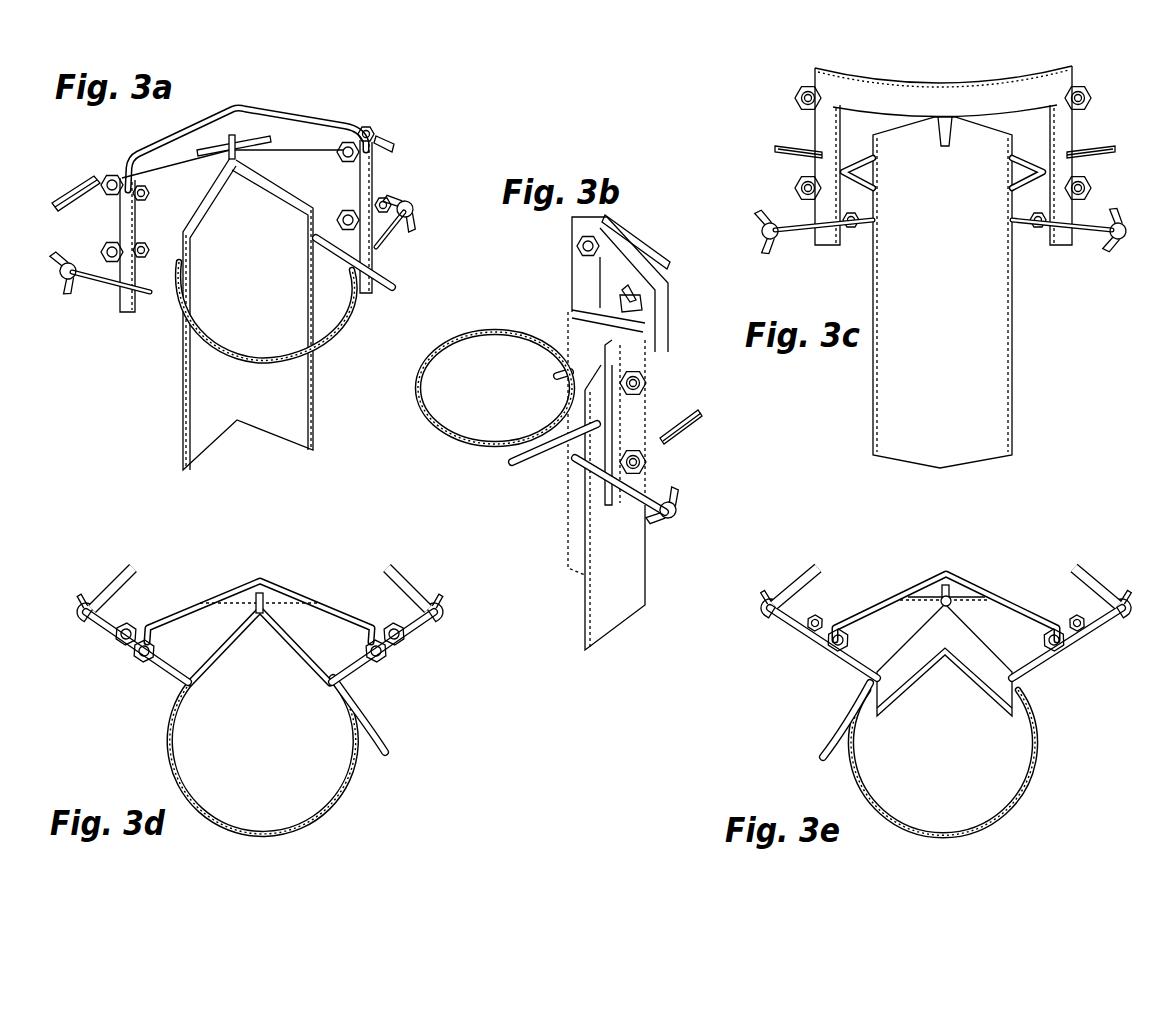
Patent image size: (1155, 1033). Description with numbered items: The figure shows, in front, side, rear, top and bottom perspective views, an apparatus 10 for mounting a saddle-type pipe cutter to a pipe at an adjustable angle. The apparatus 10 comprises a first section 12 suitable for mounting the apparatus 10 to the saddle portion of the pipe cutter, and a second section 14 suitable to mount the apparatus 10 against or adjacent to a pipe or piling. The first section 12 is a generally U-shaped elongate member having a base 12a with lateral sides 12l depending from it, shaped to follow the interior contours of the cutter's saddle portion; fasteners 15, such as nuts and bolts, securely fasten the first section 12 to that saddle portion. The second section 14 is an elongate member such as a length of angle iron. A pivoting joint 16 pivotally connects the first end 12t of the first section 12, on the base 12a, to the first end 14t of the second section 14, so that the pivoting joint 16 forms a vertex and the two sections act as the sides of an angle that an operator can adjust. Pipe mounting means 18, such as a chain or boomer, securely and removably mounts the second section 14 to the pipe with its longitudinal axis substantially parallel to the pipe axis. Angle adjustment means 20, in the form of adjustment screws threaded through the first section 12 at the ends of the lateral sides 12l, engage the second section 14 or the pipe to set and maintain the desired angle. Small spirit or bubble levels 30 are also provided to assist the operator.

In FIG. 3A, the apparatus 10 is at (422, 108).
In FIG. 3B, the apparatus 10 is at (645, 190).
In FIG. 3C, the apparatus 10 is at (767, 108).
In FIG. 3D, the apparatus 10 is at (314, 562).
In FIG. 3E, the apparatus 10 is at (1026, 558).
In FIG. 3A, the first section 12 is at (278, 194).
In FIG. 3B, the first section 12 is at (660, 361).
In FIG. 3C, the first section 12 is at (959, 180).
In FIG. 3D, the first section 12 is at (200, 593).
In FIG. 3E, the first section 12 is at (882, 586).
In FIG. 3A, the base 12a is at (165, 130).
In FIG. 3C, the base 12a is at (943, 91).
In FIG. 3A, the first end 12t is at (300, 113).
In FIG. 3B, the first end 12t is at (676, 300).
In FIG. 3A, the lateral sides 12l is at (136, 240).
In FIG. 3B, the lateral sides 12l is at (625, 422).
In FIG. 3C, the lateral sides 12l is at (830, 247).
In FIG. 3A, the second section 14 is at (232, 303).
In FIG. 3B, the second section 14 is at (561, 453).
In FIG. 3C, the second section 14 is at (942, 292).
In FIG. 3D, the second section 14 is at (223, 674).
In FIG. 3E, the second section 14 is at (903, 716).
In FIG. 3A, the first end 14t is at (252, 160).
In FIG. 3B, the first end 14t is at (620, 330).
In FIG. 3A, the fasteners 15 is at (362, 124).
In FIG. 3B, the fasteners 15 is at (570, 245).
In FIG. 3C, the fasteners 15 is at (798, 88).
In FIG. 3A, the pivoting joint 16 is at (237, 130).
In FIG. 3B, the pivoting joint 16 is at (632, 303).
In FIG. 3C, the pivoting joint 16 is at (945, 131).
In FIG. 3D, the pivoting joint 16 is at (256, 590).
In FIG. 3E, the pivoting joint 16 is at (944, 590).
In FIG. 3A, the pipe mounting means 18 is at (170, 333).
In FIG. 3B, the pipe mounting means 18 is at (460, 445).
In FIG. 3C, the pipe mounting means 18 is at (943, 173).
In FIG. 3D, the pipe mounting means 18 is at (356, 797).
In FIG. 3E, the pipe mounting means 18 is at (1046, 779).
In FIG. 3A, the angle adjustment means 20 is at (95, 303).
In FIG. 3B, the angle adjustment means 20 is at (688, 512).
In FIG. 3C, the angle adjustment means 20 is at (756, 232).
In FIG. 3D, the angle adjustment means 20 is at (260, 637).
In FIG. 3E, the angle adjustment means 20 is at (946, 633).
In FIG. 3A, the spirit or bubble levels 30 is at (75, 183).
In FIG. 3B, the spirit or bubble levels 30 is at (659, 244).
In FIG. 3C, the spirit or bubble levels 30 is at (770, 143).
In FIG. 3D, the spirit or bubble levels 30 is at (100, 585).
In FIG. 3E, the spirit or bubble levels 30 is at (813, 556).